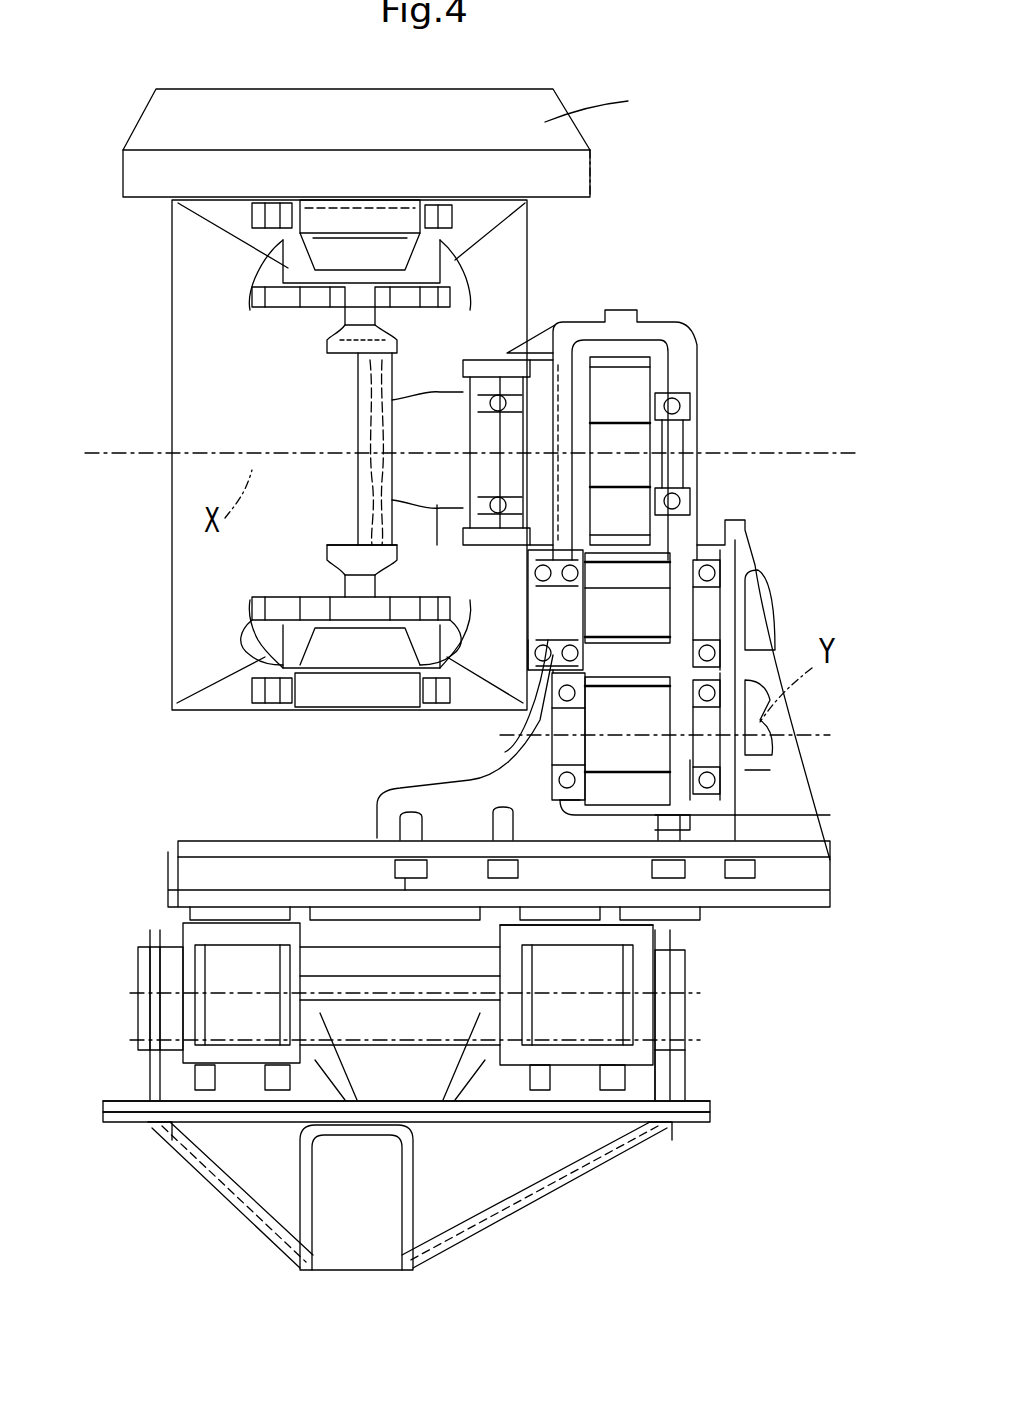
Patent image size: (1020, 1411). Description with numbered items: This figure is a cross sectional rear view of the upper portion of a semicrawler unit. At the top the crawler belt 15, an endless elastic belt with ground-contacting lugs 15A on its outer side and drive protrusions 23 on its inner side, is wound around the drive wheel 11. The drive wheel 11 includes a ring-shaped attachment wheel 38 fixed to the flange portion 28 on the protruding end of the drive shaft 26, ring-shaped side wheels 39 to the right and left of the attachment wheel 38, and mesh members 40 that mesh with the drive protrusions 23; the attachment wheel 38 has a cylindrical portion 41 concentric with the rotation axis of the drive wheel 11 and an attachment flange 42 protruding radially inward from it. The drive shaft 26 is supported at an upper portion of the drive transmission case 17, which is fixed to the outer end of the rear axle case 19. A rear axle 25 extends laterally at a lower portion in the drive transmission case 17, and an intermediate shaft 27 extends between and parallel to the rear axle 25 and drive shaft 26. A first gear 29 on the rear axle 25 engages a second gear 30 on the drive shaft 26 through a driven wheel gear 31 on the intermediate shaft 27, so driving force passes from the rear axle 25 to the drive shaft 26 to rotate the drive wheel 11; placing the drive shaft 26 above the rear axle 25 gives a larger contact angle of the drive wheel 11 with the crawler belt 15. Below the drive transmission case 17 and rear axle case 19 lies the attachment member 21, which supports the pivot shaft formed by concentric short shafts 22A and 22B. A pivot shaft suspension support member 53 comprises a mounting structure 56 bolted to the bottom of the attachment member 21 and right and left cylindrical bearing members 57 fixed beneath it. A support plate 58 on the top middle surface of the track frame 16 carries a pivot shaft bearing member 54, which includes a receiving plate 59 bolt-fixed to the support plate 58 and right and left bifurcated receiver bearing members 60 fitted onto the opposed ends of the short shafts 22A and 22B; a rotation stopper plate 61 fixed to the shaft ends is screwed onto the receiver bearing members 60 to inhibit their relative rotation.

The drive wheel 11 is at (170, 252).
The crawler belt 15 is at (596, 151).
The ground-contacting lugs 15A is at (611, 103).
The track frame 16 is at (412, 1180).
The drive transmission case 17 is at (630, 300).
The rear axle case 19 is at (750, 565).
The attachment member 21 is at (236, 838).
The short shaft 22A is at (238, 1020).
The short shaft 22B is at (605, 1020).
The drive protrusions 23 is at (330, 252).
The rear axle 25 is at (685, 757).
The drive shaft 26 is at (475, 467).
The intermediate shaft 27 is at (645, 615).
The flange portion 28 is at (372, 422).
The first gear 29 is at (610, 782).
The second gear 30 is at (630, 385).
The driven wheel gear 31 is at (606, 657).
The attachment wheel 38 is at (266, 526).
The side wheels 39 is at (265, 665).
The mesh members 40 is at (362, 215).
The cylindrical portion 41 is at (345, 602).
The attachment flange 42 is at (334, 531).
The pivot shaft suspension support member 53 is at (158, 910).
The pivot shaft bearing member 54 is at (112, 1082).
The mounting structure 56 is at (600, 803).
The cylindrical bearing members 57 is at (595, 935).
The support plate 58 is at (675, 1125).
The receiving plate 59 is at (690, 1118).
The bifurcated receiver bearing members 60 is at (690, 1106).
The rotation stopper plate 61 is at (675, 1025).